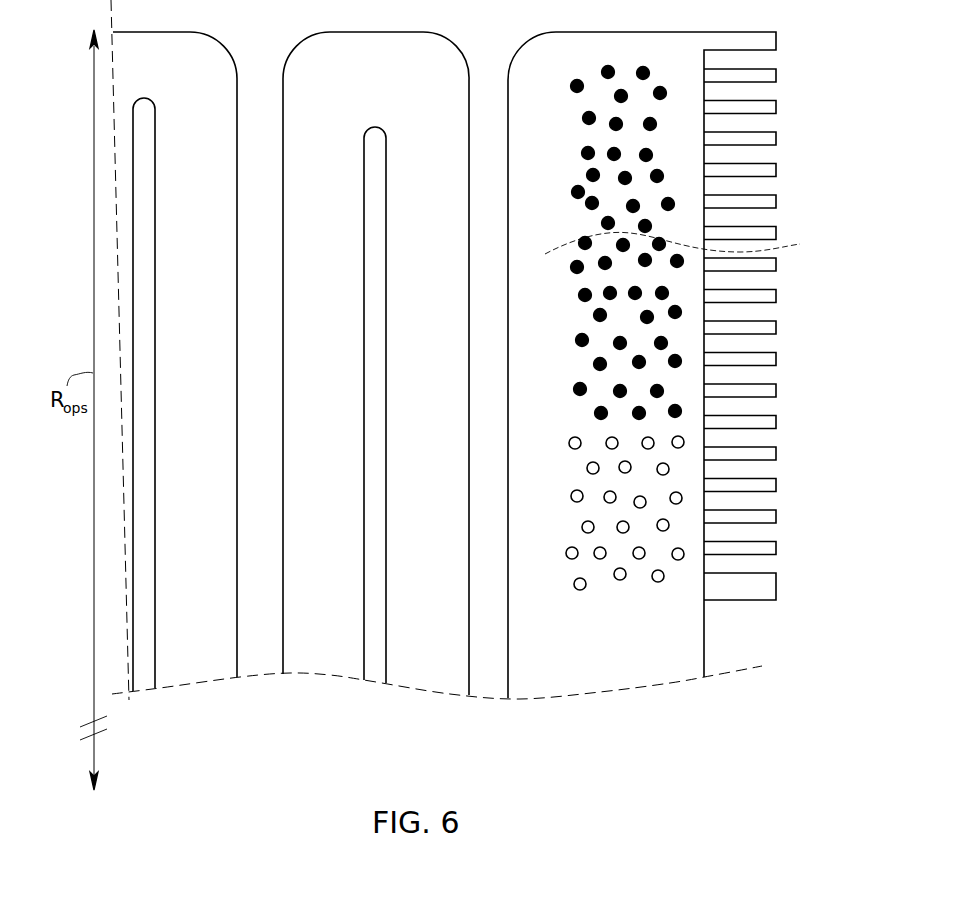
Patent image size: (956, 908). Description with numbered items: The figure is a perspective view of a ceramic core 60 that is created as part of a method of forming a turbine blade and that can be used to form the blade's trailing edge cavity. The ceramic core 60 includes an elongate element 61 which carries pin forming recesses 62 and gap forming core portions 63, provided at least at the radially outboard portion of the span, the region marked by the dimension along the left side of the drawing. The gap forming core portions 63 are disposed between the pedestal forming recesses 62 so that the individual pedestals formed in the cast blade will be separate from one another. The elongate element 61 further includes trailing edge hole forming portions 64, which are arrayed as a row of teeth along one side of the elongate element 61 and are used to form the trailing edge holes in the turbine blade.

The ceramic core 60 is at (551, 153).
The elongate element 61 is at (687, 244).
The pin forming recesses 62 is at (682, 311).
The gap forming core portions 63 is at (675, 361).
The trailing edge hole forming portions 64 is at (777, 455).